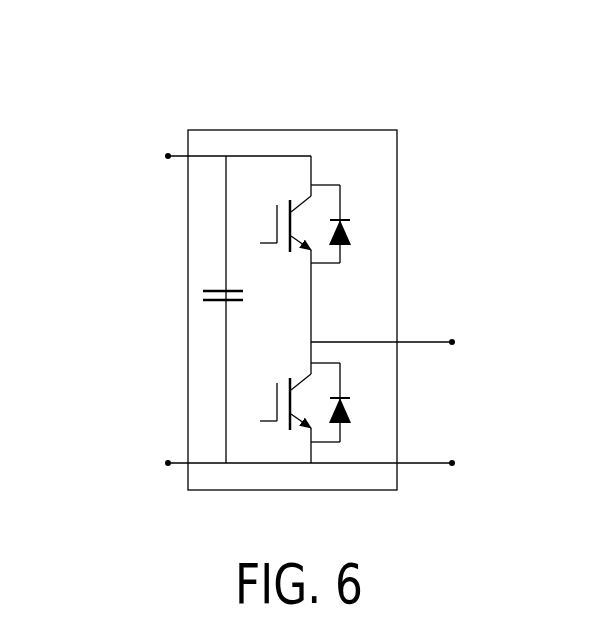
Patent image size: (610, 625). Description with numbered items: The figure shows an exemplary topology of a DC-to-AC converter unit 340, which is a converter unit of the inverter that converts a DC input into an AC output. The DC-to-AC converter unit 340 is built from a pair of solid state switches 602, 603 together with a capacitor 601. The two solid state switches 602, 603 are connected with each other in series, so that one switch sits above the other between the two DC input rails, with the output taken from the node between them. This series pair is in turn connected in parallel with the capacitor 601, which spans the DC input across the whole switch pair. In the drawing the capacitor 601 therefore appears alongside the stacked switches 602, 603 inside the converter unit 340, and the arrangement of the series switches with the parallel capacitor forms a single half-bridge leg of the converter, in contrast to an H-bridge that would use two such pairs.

The DC-to-AC converter unit 340 is at (280, 260).
The capacitor 601 is at (233, 295).
The solid state switch 602 is at (367, 283).
The solid state switch 603 is at (367, 395).